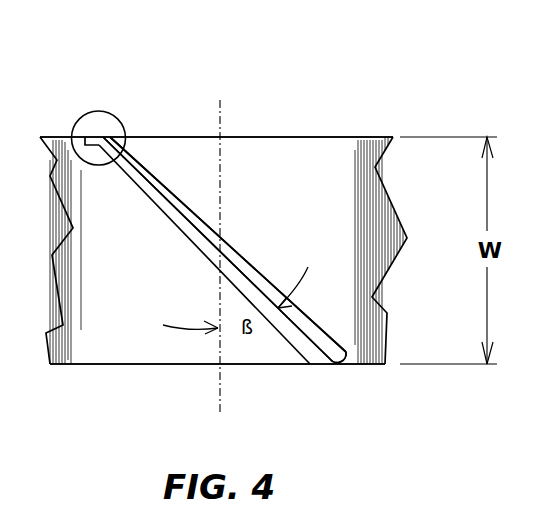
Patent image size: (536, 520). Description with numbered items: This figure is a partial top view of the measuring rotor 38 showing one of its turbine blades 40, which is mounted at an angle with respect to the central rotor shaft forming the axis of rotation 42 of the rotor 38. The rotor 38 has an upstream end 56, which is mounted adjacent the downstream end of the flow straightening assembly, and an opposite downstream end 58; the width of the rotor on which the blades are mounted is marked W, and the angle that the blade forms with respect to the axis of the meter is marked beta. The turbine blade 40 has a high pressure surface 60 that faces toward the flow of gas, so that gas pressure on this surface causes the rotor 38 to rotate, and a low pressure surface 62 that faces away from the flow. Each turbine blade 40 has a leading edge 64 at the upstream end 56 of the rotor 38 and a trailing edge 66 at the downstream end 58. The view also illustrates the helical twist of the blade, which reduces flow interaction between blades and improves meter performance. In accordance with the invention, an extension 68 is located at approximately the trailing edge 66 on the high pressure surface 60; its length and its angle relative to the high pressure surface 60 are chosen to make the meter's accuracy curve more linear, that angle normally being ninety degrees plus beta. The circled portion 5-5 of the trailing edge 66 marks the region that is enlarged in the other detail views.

The measuring rotor 38 is at (120, 294).
The turbine blade 40 is at (172, 183).
The axis of rotation 42 is at (225, 254).
The upstream end 56 is at (170, 365).
The downstream end 58 is at (288, 137).
The high pressure surface 60 is at (305, 348).
The low pressure surface 62 is at (141, 165).
The leading edge 64 is at (347, 362).
The trailing edge 66 is at (96, 135).
The extension 68 is at (87, 135).
The circled portion 5-5 is at (120, 120).